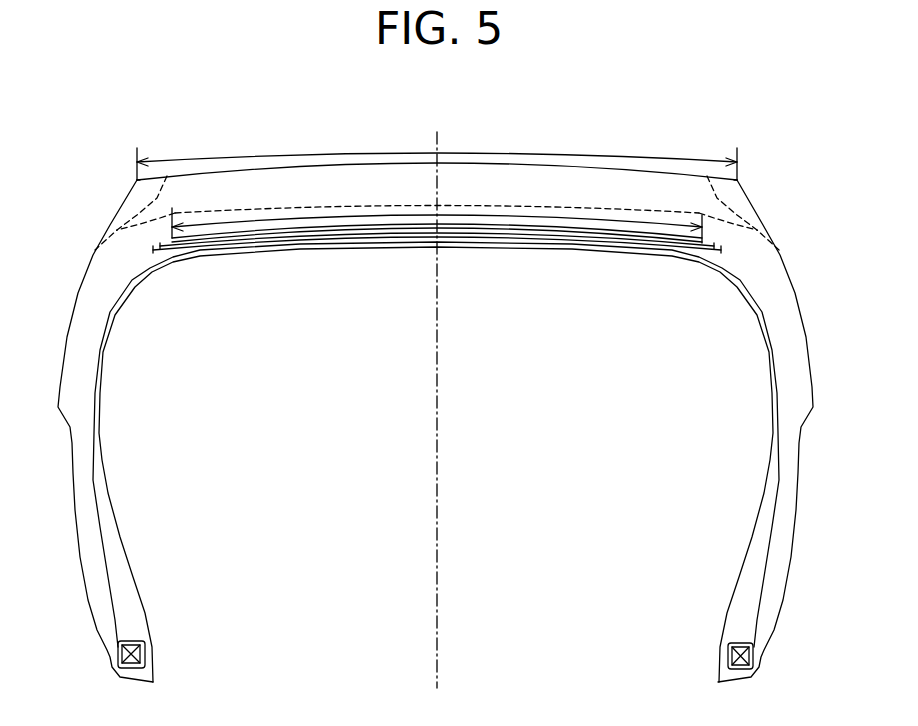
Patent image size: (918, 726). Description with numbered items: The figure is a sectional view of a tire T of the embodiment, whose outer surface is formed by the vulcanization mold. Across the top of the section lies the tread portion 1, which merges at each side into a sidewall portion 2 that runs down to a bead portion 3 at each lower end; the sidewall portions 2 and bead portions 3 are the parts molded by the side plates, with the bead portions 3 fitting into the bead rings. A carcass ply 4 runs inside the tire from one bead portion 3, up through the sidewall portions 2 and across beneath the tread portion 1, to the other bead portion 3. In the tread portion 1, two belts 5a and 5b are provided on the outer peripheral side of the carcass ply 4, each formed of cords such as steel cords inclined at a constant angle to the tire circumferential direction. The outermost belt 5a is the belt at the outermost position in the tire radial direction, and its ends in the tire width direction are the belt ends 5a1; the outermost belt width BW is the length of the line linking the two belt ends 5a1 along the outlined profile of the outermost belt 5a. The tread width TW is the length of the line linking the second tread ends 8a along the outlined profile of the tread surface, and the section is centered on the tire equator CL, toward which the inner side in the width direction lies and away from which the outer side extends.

The tread portion 1 is at (582, 172).
The sidewall portion 2 is at (80, 468).
The bead portion 3 is at (110, 640).
The carcass ply 4 is at (473, 237).
The outermost belt 5a is at (568, 225).
The belt end 5a1 is at (160, 250).
The belt 5b is at (526, 230).
The second tread end 8a is at (137, 180).
The tire T is at (794, 212).
The tread width TW is at (370, 153).
The outermost belt width BW is at (292, 212).
The tire equator CL is at (437, 627).